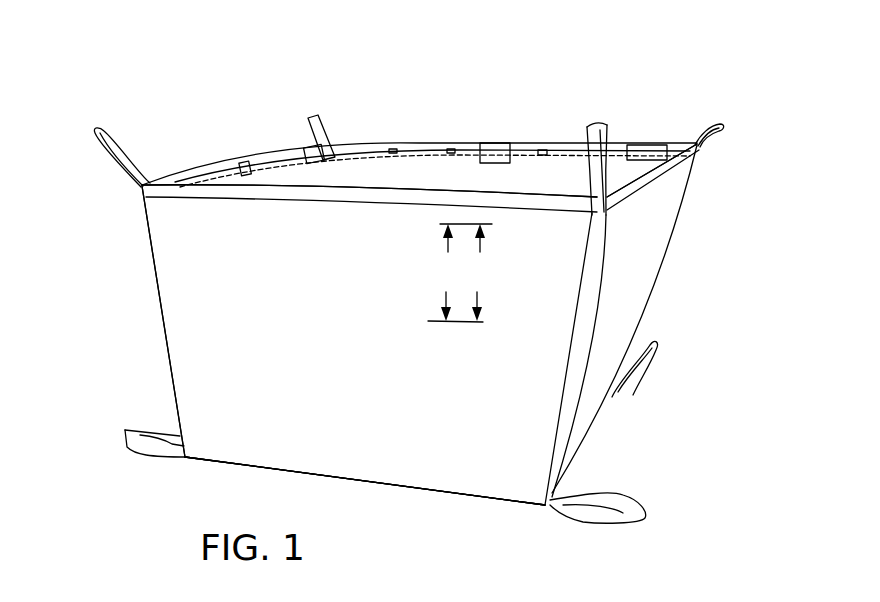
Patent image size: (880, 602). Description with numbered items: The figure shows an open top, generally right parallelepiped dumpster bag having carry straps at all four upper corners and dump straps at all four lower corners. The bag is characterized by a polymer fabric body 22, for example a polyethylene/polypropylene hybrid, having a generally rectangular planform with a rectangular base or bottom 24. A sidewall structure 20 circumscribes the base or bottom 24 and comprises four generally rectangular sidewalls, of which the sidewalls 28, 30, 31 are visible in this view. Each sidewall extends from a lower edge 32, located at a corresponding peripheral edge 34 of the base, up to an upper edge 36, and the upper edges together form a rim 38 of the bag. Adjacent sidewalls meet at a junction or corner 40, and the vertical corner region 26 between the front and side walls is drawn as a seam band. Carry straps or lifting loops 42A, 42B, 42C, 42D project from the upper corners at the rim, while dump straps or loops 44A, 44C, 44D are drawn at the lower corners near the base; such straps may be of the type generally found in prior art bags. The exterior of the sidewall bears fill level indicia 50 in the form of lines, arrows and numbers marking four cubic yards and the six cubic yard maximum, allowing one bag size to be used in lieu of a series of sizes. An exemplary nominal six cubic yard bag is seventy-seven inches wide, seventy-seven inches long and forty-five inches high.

The sidewall structure 20 is at (421, 302).
The body 22 is at (640, 430).
The base or bottom 24 is at (369, 327).
The corner seam 26 is at (632, 311).
The sidewall 28 is at (400, 462).
The sidewall 30 is at (320, 178).
The sidewall 31 is at (653, 213).
The lower edge 32 is at (262, 470).
The peripheral edge 34 is at (307, 470).
The upper edge 36 is at (417, 190).
The rim 38 is at (660, 134).
The junction or corner 40 is at (158, 302).
The lifting loop 42A is at (120, 133).
The lifting loop 42B is at (318, 122).
The lifting loop 42C is at (720, 128).
The lifting loop 42D is at (597, 130).
The lower tie loop 44A is at (135, 443).
The lower tie loop 44C is at (658, 356).
The lower tie loop 44D is at (647, 517).
The fill level indicia 50 is at (510, 375).